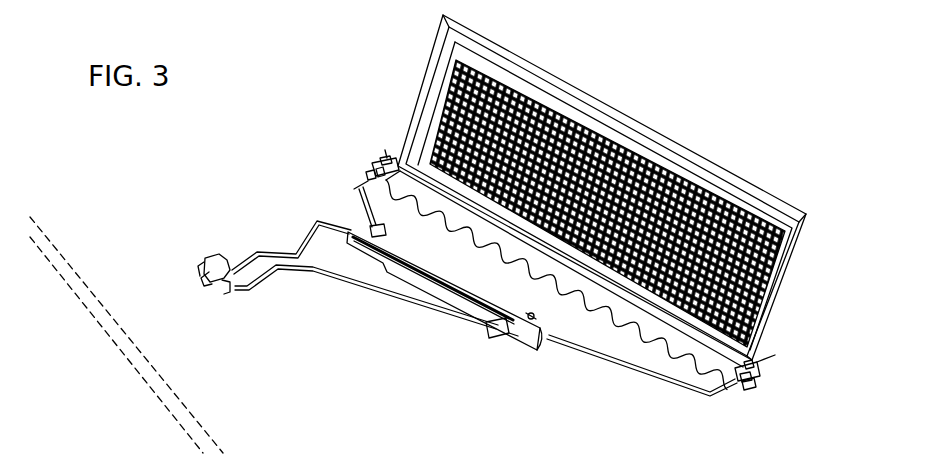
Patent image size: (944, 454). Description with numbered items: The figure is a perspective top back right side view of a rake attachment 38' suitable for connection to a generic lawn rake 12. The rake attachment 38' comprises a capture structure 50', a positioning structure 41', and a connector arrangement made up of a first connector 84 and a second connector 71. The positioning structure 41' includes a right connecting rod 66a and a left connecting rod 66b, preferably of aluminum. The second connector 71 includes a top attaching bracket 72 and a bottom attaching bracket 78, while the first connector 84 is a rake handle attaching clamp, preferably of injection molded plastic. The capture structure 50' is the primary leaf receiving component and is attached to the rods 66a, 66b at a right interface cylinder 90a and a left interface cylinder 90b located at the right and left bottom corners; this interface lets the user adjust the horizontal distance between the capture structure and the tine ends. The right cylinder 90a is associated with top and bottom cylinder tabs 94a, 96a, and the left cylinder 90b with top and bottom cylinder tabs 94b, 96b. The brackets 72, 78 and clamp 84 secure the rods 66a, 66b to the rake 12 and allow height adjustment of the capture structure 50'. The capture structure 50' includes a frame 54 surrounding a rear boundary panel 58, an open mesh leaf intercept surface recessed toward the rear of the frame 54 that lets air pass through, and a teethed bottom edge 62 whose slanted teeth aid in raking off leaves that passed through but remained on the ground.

The rake 12 is at (262, 448).
The rake attachment 38' is at (270, 41).
The positioning structure 41' is at (561, 307).
The capture structure 50' is at (612, 187).
The frame 54 is at (432, 105).
The rear boundary panel 58 is at (514, 110).
The teethed bottom edge 62 is at (612, 317).
The right connecting rod 66a is at (668, 372).
The left connecting rod 66b is at (325, 223).
The second connector 71 is at (444, 256).
The top attaching bracket 72 is at (477, 292).
The bottom attaching bracket 78 is at (489, 330).
The first connector 84 is at (227, 263).
The right interface cylinder 90a is at (755, 366).
The left interface cylinder 90b is at (400, 160).
The top cylinder tab 94a is at (750, 380).
The top cylinder tab 94b is at (375, 164).
The bottom cylinder tab 96a is at (748, 388).
The bottom cylinder tab 96b is at (368, 173).